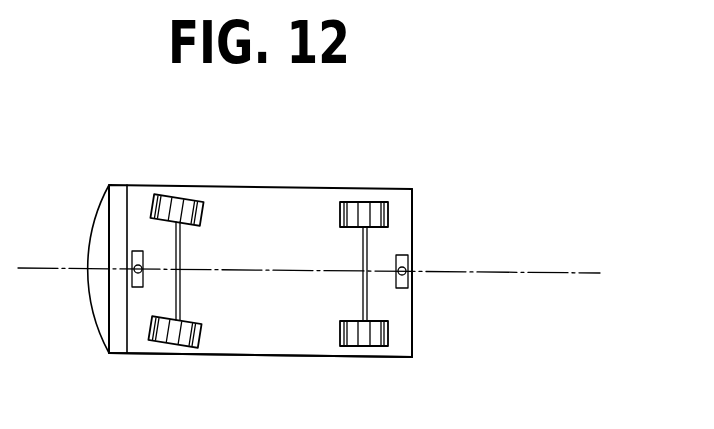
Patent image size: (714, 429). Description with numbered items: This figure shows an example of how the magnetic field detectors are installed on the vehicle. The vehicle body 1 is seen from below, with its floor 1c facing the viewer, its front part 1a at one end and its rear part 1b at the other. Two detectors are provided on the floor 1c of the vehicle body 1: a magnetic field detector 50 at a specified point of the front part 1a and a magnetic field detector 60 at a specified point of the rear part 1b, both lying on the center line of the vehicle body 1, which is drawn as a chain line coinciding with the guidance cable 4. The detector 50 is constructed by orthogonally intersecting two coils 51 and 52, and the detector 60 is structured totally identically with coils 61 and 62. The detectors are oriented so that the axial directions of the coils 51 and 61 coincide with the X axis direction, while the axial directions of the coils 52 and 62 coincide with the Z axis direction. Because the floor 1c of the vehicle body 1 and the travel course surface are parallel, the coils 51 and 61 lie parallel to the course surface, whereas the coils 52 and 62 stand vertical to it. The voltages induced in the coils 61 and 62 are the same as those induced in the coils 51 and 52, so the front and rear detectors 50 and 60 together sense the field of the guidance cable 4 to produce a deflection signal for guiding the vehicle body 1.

The vehicle body 1 is at (295, 187).
The front part 1a is at (407, 187).
The rear part 1b is at (137, 185).
The floor 1c is at (268, 342).
The guidance cable 4 is at (553, 272).
The magnetic field detector 50 is at (442, 283).
The coil 51 is at (405, 290).
The coil 52 is at (408, 283).
The magnetic field detector 60 is at (89, 278).
The coil 61 is at (138, 288).
The coil 62 is at (133, 281).